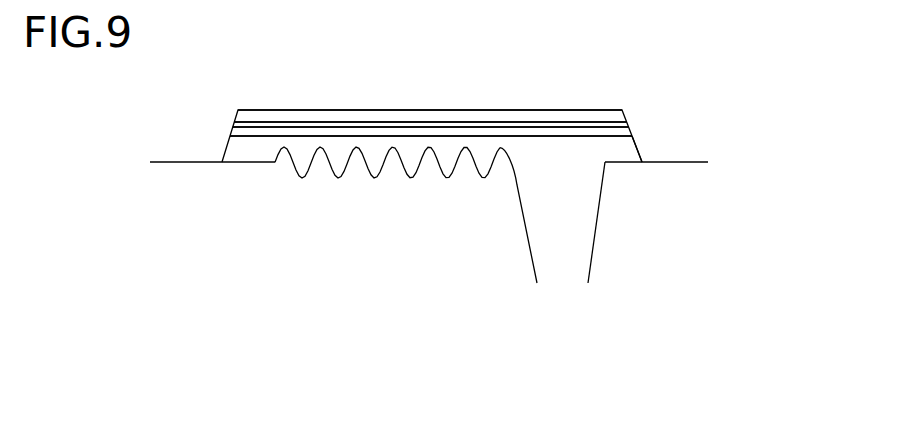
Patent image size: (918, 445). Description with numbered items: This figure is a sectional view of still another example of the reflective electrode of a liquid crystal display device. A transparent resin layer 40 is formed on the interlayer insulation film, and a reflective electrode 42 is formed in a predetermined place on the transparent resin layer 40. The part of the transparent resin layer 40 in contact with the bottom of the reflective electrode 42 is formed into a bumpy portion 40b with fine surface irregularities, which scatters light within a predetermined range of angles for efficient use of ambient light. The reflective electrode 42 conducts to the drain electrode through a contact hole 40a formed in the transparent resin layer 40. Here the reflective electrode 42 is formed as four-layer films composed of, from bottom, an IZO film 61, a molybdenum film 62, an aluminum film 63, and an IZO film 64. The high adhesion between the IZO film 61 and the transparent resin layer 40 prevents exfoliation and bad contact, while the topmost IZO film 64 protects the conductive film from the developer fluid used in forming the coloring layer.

The transparent resin layer 40 is at (190, 188).
The contact hole 40a is at (552, 225).
The bumpy portion 40b is at (366, 167).
The reflective electrode 42 is at (708, 45).
The IZO film 61 is at (613, 148).
The molybdenum film 62 is at (630, 128).
The aluminum film 63 is at (627, 119).
The IZO film 64 is at (599, 110).